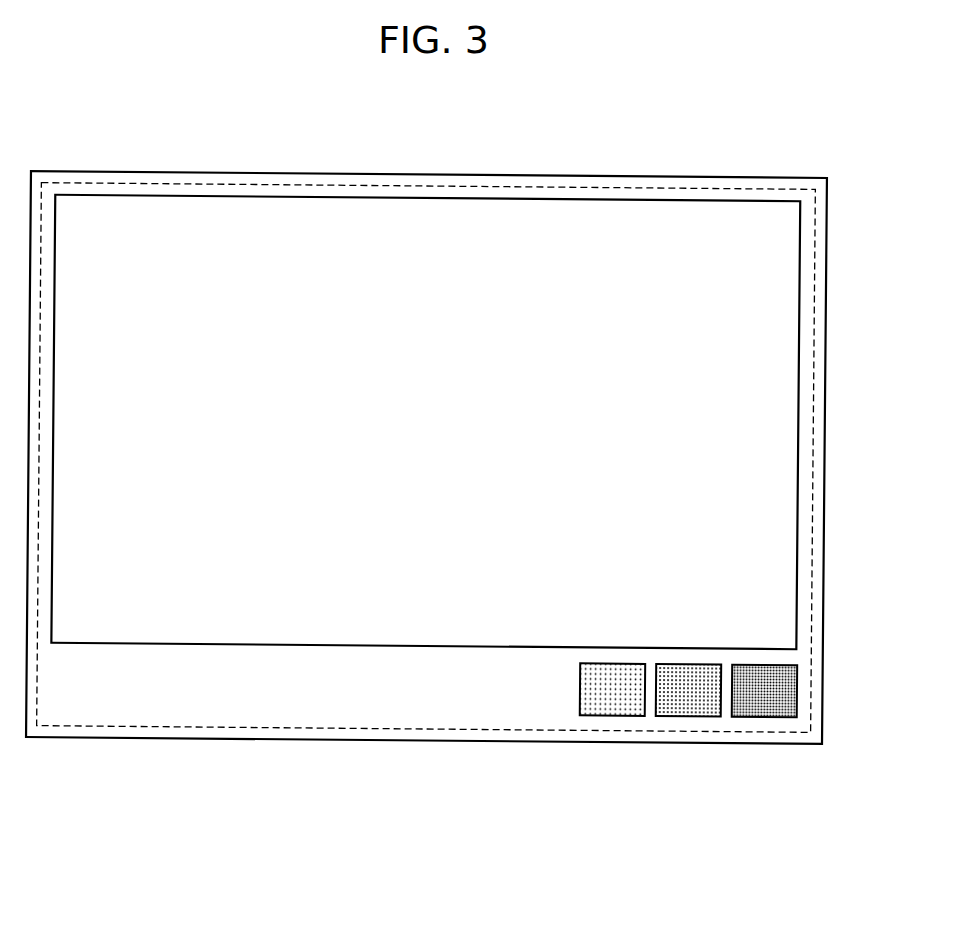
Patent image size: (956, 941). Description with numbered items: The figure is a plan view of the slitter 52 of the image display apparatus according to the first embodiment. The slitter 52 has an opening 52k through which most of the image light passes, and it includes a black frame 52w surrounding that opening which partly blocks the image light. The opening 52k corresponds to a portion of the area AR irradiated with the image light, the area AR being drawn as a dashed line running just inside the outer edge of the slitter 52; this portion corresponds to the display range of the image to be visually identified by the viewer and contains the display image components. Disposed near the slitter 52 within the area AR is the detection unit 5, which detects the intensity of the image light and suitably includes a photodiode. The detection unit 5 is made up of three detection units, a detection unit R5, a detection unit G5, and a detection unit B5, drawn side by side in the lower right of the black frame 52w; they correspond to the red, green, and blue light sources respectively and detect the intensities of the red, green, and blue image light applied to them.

The slitter 52 is at (141, 165).
The opening 52k is at (592, 295).
The black frame 52w is at (237, 688).
The area AR is at (715, 187).
The detection unit 5 is at (688, 775).
The detection unit R5 is at (612, 697).
The detection unit G5 is at (690, 697).
The detection unit B5 is at (764, 757).